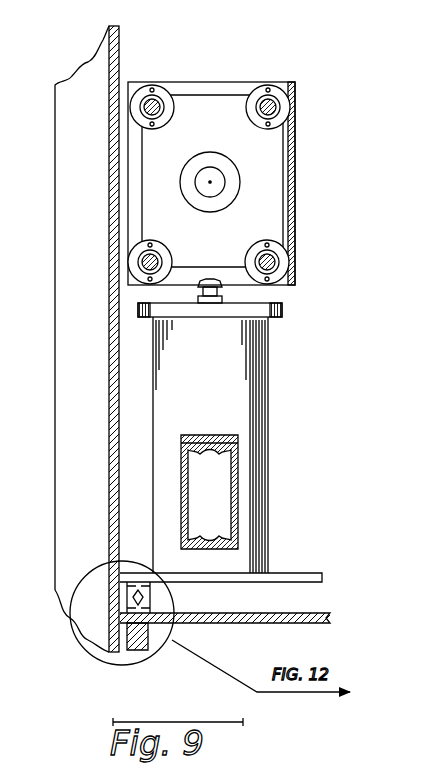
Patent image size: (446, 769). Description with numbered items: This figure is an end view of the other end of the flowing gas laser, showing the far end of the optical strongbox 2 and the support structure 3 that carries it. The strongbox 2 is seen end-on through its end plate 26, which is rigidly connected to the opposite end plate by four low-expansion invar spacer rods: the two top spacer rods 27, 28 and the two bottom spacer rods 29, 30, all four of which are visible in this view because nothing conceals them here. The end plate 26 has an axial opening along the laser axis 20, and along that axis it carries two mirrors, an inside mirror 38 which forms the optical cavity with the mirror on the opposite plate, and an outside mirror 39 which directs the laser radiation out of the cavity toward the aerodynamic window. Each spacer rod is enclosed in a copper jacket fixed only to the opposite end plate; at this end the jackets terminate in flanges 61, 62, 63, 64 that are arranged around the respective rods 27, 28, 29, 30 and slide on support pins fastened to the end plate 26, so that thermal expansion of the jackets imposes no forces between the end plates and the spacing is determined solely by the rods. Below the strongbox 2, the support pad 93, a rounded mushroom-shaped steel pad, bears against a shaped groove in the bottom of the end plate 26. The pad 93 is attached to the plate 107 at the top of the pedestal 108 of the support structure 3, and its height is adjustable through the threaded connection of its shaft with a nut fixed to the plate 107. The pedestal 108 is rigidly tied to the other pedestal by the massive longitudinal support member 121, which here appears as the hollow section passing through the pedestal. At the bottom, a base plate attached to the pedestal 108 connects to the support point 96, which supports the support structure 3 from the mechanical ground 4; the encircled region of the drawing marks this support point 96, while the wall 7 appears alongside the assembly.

The optical strongbox 2 is at (302, 170).
The support structure 3 is at (278, 496).
The mechanical ground 4 is at (220, 614).
The wall 7 is at (55, 106).
The laser axis 20 is at (210, 181).
The end plate 26 is at (284, 82).
The top spacer rod 27 is at (158, 104).
The top spacer rod 28 is at (276, 105).
The bottom spacer rod 29 is at (142, 261).
The bottom spacer rod 30 is at (276, 258).
The inside mirror 38 is at (207, 190).
The outside mirror 39 is at (196, 170).
The jacket flange 61 is at (140, 86).
The jacket flange 62 is at (258, 88).
The jacket flange 63 is at (133, 268).
The jacket flange 64 is at (283, 275).
The support pad 93 is at (206, 279).
The support point 96 is at (158, 658).
The plate 107 is at (276, 318).
The pedestal 108 is at (269, 374).
The longitudinal support member 121 is at (238, 482).